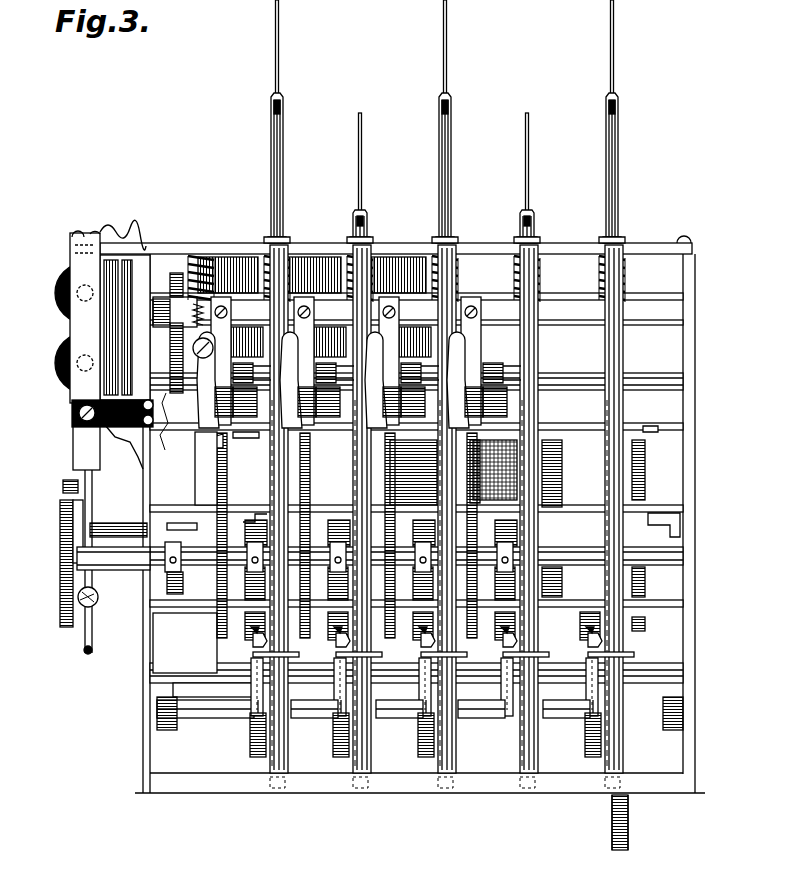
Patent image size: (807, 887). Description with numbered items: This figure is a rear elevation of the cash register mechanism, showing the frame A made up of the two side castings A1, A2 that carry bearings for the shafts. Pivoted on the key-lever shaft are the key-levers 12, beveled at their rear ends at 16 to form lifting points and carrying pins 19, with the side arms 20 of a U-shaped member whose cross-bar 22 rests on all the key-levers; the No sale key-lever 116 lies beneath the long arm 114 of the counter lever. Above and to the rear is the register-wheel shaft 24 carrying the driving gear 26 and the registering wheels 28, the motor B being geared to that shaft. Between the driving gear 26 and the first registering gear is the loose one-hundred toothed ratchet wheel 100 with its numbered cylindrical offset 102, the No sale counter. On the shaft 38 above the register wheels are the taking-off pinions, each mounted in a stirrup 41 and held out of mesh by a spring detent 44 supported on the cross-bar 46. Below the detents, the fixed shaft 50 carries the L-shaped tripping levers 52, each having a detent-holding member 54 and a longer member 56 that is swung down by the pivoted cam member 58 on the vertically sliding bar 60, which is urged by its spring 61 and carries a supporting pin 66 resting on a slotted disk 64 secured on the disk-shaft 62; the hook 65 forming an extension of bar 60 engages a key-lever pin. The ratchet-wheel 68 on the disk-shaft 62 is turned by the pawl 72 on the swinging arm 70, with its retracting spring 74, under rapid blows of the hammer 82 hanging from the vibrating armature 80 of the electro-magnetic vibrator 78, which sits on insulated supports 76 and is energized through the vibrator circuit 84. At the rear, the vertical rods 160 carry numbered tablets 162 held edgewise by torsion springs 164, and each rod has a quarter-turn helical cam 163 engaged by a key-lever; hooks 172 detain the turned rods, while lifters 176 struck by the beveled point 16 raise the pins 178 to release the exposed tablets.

The numbered tablets 162 is at (283, 62).
The torsion springs 164 is at (266, 243).
The spring 61 is at (200, 260).
The cross-bar 46 is at (411, 306).
The vertical rods 160 is at (537, 337).
The spring detent 44 is at (353, 361).
The pivoted cam member 58 is at (330, 462).
The stirrup 41 is at (244, 378).
The detent-holding member 54 is at (361, 404).
The shaft 38 is at (652, 380).
The fixed shaft 50 is at (670, 424).
The tripping lever 52 is at (232, 454).
The longer member 56 is at (213, 446).
The vertically sliding bar 60 is at (206, 468).
The supporting pins 66 is at (250, 522).
The registering wheels 28 is at (341, 560).
The slotted disks 64 is at (170, 583).
The driving gear 26 is at (649, 485).
The register-wheel shaft 24 is at (662, 520).
The one-hundred toothed ratchet wheel 100 is at (582, 585).
The cylindrical offset 102 is at (583, 599).
The quarter-turn helical cam 163 is at (417, 626).
The swinging spring-pressed hook 65 is at (200, 653).
The pin 178 is at (254, 648).
The hooks 172 is at (648, 655).
The long arm 114 is at (572, 646).
The cross-bar 22 is at (445, 687).
The key-lever pins 19 is at (234, 719).
The lifters 176 is at (252, 735).
The side arms 20 is at (165, 730).
The key-levers 12 is at (259, 774).
The beveled extremity 16 is at (262, 763).
The No sale key-lever 116 is at (592, 755).
The electro-magnetic vibrator 78 is at (55, 350).
The supports 76 is at (112, 258).
The vibrator circuit 84 is at (110, 247).
The vibrating armature 80 is at (73, 451).
The swinging arm 70 is at (92, 512).
The pawl 72 is at (62, 485).
The ratchet-wheel 68 is at (60, 530).
The disk-shaft 62 is at (113, 558).
The hammer 82 is at (98, 598).
The retracting spring 74 is at (86, 652).
The frame A is at (398, 223).
The electric motor B is at (496, 355).
The frame casting A1 is at (122, 634).
The frame casting A2 is at (713, 442).